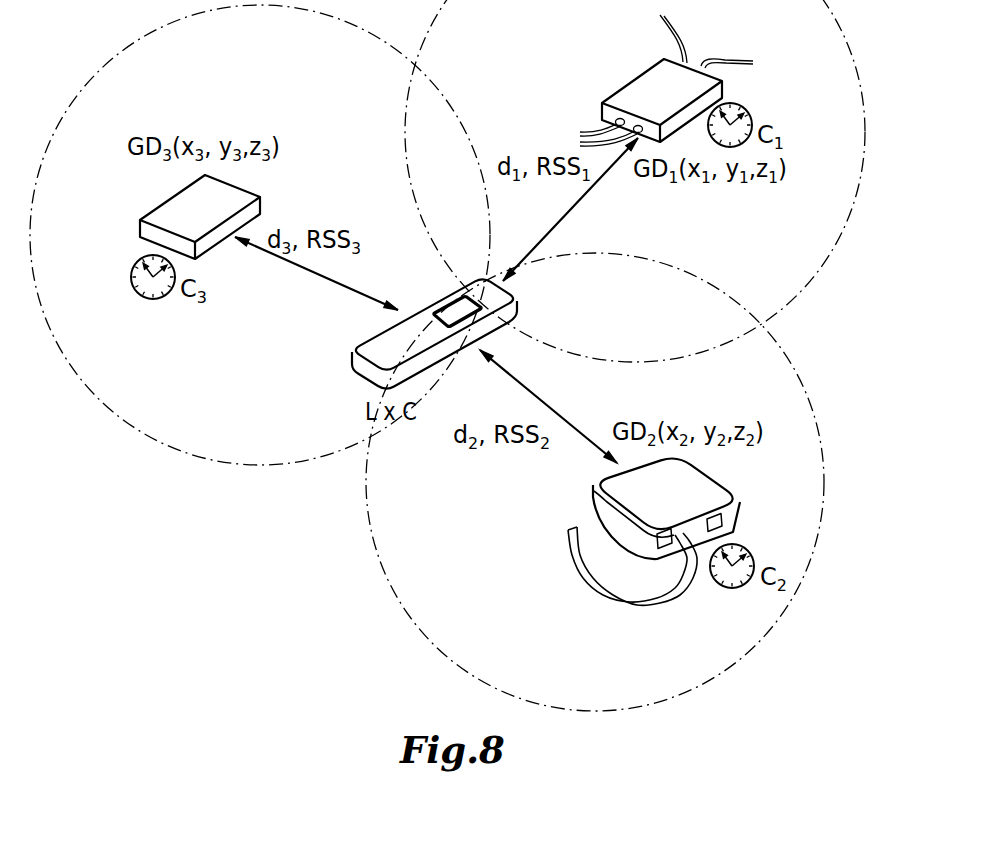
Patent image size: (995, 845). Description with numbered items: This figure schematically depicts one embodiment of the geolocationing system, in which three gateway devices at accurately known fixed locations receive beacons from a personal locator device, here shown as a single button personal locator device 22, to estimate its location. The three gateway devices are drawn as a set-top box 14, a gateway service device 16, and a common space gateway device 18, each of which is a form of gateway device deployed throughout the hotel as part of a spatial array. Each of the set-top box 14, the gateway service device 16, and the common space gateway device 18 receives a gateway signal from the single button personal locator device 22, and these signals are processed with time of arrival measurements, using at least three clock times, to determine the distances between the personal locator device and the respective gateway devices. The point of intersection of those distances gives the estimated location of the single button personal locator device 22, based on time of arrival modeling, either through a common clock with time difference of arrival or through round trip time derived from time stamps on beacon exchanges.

The set-top box 14 is at (648, 90).
The gateway service device 16 is at (610, 488).
The common space gateway device 18 is at (158, 212).
The single button personal locator device 22 is at (382, 337).